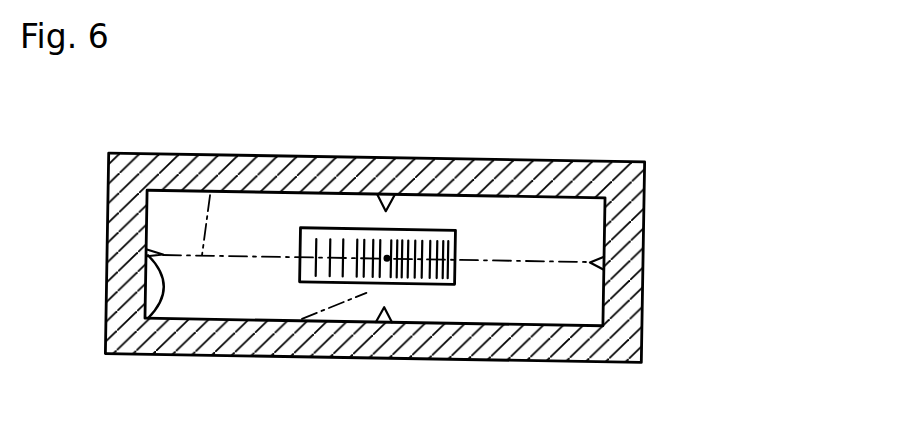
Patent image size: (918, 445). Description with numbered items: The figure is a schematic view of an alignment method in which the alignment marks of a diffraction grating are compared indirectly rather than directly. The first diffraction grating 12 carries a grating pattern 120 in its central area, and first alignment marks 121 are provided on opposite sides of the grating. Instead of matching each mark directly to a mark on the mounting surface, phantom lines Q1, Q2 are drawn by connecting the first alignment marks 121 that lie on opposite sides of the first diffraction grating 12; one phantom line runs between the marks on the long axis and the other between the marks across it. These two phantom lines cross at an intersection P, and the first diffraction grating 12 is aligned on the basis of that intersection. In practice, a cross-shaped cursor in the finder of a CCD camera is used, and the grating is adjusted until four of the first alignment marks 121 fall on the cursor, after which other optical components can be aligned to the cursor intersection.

The first diffraction grating 12 is at (631, 158).
The grating pattern 120 is at (425, 245).
The first alignment marks 121 is at (668, 267).
The phantom line Q1 is at (211, 194).
The phantom line Q2 is at (298, 322).
The intersection P is at (388, 259).